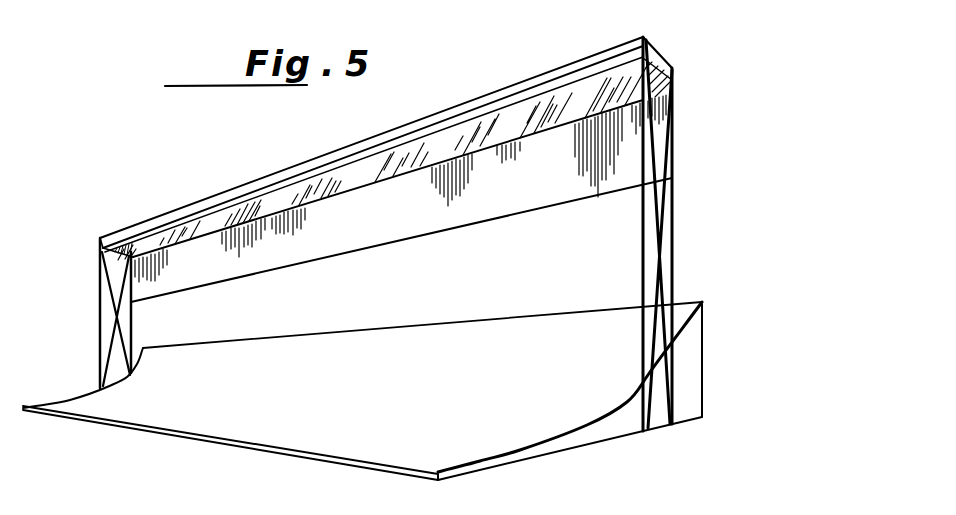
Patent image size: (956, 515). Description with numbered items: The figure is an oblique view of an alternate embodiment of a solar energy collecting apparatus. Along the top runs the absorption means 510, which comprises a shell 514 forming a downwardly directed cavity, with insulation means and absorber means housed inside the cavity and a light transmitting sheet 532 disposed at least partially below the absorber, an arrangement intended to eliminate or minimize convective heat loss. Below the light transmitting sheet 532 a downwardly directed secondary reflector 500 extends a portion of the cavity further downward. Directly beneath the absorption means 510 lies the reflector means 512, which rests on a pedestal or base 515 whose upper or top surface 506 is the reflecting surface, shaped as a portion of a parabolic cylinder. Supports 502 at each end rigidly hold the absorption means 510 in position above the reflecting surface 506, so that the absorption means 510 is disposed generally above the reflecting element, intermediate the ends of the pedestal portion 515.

The secondary reflector 500 is at (545, 190).
The supports 502 is at (100, 318).
The top surface 506 is at (678, 348).
The absorption means 510 is at (211, 191).
The reflector means 512 is at (615, 446).
The shell 514 is at (668, 56).
The pedestal 515 is at (704, 388).
The light transmitting sheet 532 is at (428, 152).